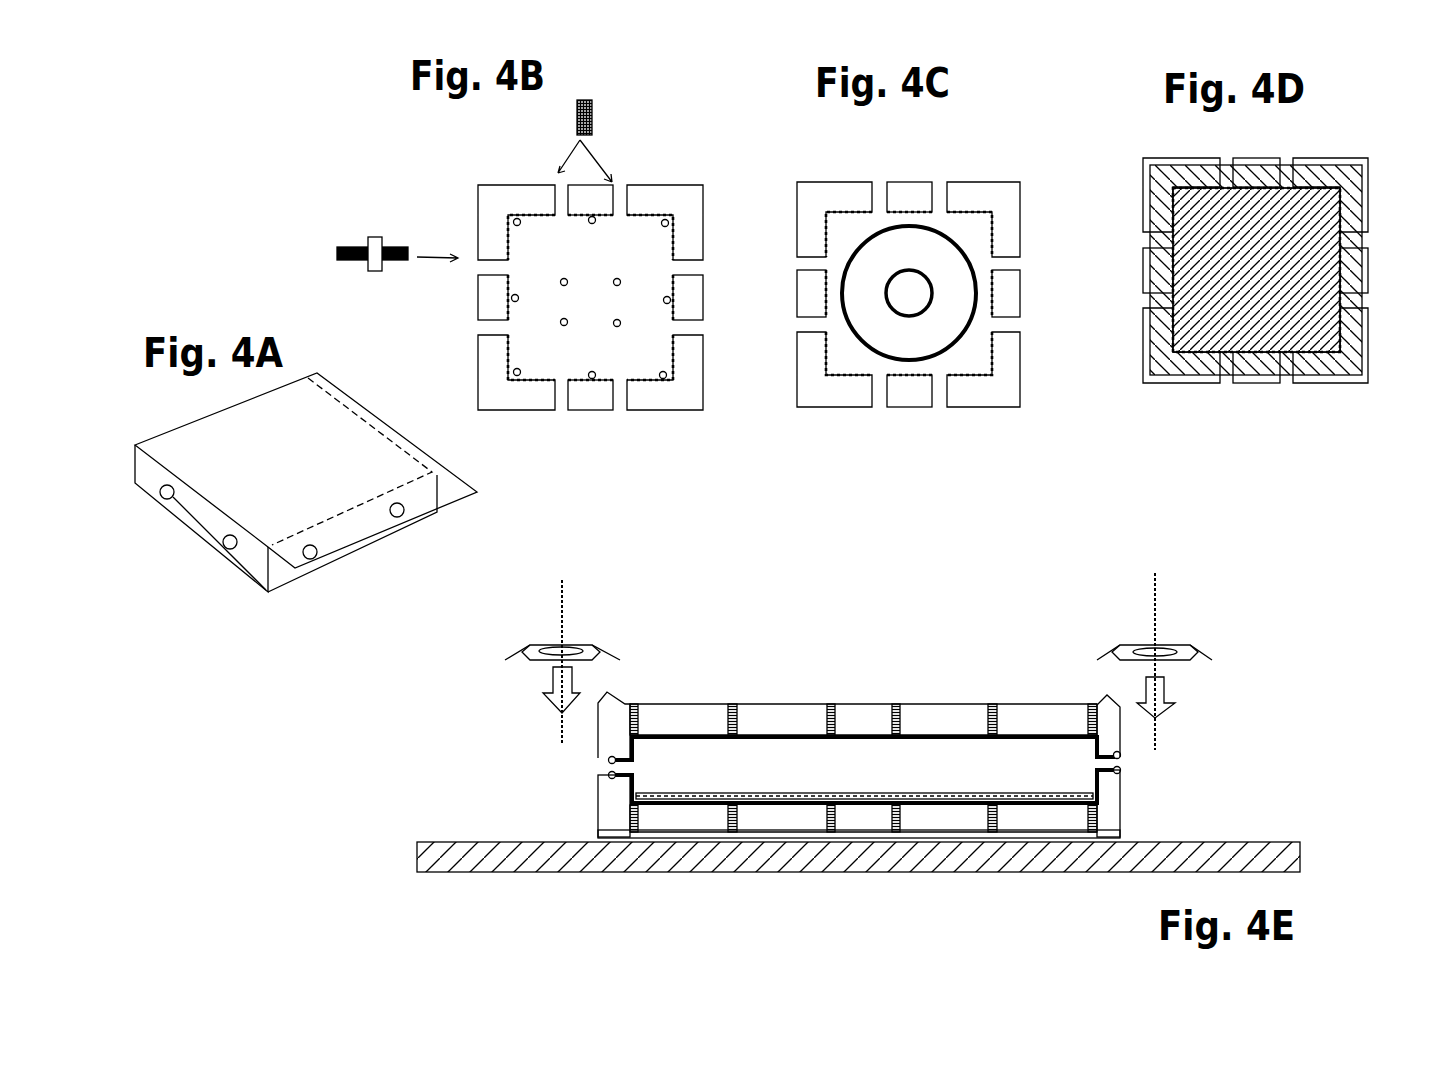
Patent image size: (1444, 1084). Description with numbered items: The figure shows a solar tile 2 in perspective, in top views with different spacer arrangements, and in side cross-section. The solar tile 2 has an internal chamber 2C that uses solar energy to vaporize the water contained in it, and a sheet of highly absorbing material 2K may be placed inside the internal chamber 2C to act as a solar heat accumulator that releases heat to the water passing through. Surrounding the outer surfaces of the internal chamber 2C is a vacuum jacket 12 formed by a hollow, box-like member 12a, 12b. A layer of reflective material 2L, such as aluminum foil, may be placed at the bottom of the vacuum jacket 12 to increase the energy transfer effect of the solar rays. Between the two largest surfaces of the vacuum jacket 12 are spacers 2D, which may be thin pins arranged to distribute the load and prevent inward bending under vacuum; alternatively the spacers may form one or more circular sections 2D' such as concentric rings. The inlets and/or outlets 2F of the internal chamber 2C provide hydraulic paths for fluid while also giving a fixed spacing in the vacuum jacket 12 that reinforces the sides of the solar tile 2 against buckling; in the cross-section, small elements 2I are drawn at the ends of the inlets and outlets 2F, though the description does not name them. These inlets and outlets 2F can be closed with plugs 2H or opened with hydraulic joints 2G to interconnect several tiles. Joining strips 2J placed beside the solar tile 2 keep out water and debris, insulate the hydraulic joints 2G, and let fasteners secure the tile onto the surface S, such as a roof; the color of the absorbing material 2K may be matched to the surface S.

In FIG. 4B, the solar tile 2 is at (705, 413).
In FIG. 4C, the solar tile 2 is at (807, 407).
In FIG. 4D, the solar tile 2 is at (1318, 158).
In FIG. 4E, the solar tile 2 is at (718, 700).
In FIG. 4B, the internal chamber 2C is at (670, 207).
In FIG. 4C, the internal chamber 2C is at (907, 293).
In FIG. 4D, the internal chamber 2C is at (1200, 222).
In FIG. 4E, the internal chamber 2C is at (750, 767).
In FIG. 4B, the spacers 2D is at (593, 356).
In FIG. 4E, the spacers 2D is at (865, 776).
In FIG. 4C, the circular sections 2D' is at (925, 358).
In FIG. 4A, the inlets and/or outlets 2F is at (277, 592).
In FIG. 4B, the inlets and/or outlets 2F is at (473, 318).
In FIG. 4C, the inlets and/or outlets 2F is at (797, 325).
In FIG. 4E, the inlets and/or outlets 2F is at (602, 768).
In FIG. 4B, the hydraulic joint 2G is at (357, 237).
In FIG. 4B, the plug 2H is at (593, 125).
In FIG. 4E, the bonding balls 2I is at (608, 775).
In FIG. 4E, the joining strips 2J is at (528, 645).
In FIG. 4D, the absorbing material 2K is at (1188, 343).
In FIG. 4E, the absorbing material 2K is at (1047, 793).
In FIG. 4D, the reflective material 2L is at (1247, 370).
In FIG. 4E, the reflective material 2L is at (600, 827).
In FIG. 4B, the vacuum jacket 12 is at (487, 233).
In FIG. 4C, the vacuum jacket 12 is at (808, 338).
In FIG. 4E, the vacuum jacket 12 is at (683, 723).
In FIG. 4E, the box-like member 12a is at (803, 733).
In FIG. 4E, the box-like member 12b is at (850, 805).
In FIG. 4E, the surface S is at (460, 877).